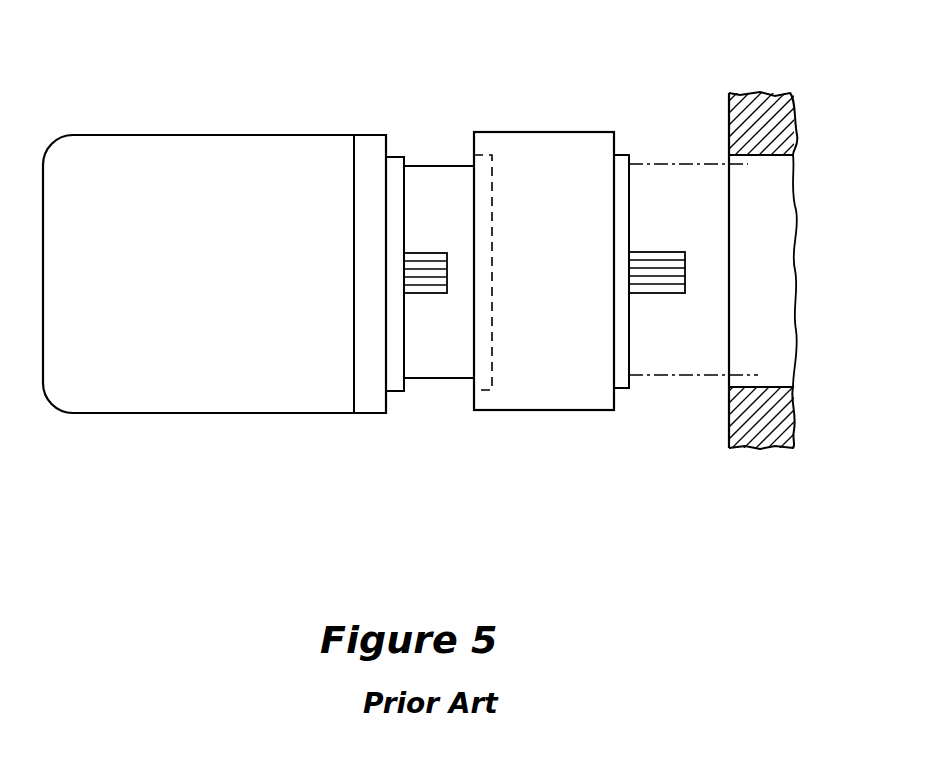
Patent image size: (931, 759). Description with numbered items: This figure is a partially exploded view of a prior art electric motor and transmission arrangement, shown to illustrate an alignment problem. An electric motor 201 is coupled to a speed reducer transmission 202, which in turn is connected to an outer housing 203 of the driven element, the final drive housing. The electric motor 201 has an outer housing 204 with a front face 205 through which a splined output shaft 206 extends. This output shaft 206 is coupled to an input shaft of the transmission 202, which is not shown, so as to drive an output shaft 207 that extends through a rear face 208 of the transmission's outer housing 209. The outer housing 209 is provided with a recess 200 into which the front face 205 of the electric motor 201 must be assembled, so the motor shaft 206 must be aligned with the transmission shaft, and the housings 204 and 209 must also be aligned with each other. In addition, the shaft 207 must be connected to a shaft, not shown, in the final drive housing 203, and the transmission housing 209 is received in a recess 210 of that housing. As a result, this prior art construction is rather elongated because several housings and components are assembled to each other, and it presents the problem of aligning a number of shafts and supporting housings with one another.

The recess 200 is at (487, 262).
The electric motor 201 is at (185, 394).
The speed reducer transmission 202 is at (547, 390).
The outer housing 203 is at (726, 419).
The outer housing 204 is at (232, 134).
The front face 205 is at (405, 208).
The splined output shaft 206 is at (420, 270).
The output shaft 207 is at (670, 268).
The rear face 208 is at (630, 192).
The outer housing 209 is at (536, 132).
The recess 210 is at (747, 337).